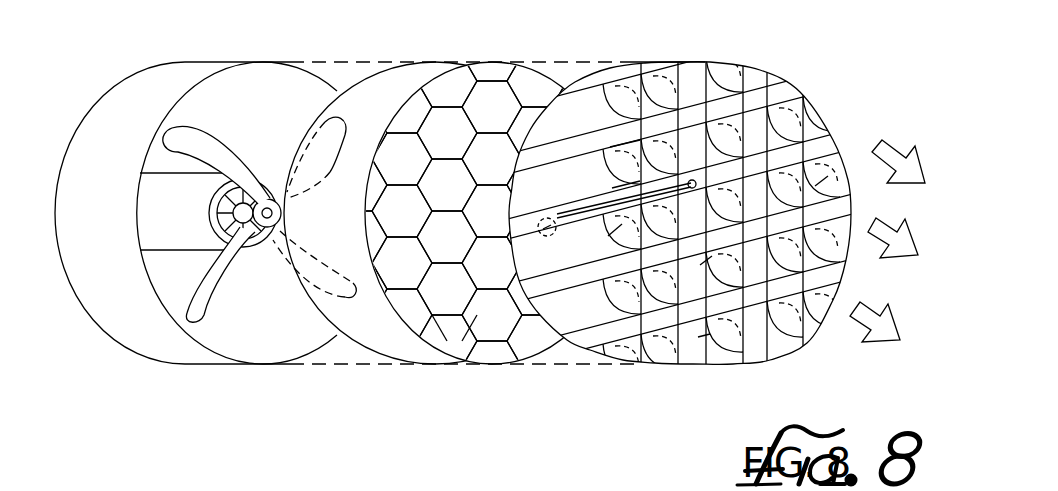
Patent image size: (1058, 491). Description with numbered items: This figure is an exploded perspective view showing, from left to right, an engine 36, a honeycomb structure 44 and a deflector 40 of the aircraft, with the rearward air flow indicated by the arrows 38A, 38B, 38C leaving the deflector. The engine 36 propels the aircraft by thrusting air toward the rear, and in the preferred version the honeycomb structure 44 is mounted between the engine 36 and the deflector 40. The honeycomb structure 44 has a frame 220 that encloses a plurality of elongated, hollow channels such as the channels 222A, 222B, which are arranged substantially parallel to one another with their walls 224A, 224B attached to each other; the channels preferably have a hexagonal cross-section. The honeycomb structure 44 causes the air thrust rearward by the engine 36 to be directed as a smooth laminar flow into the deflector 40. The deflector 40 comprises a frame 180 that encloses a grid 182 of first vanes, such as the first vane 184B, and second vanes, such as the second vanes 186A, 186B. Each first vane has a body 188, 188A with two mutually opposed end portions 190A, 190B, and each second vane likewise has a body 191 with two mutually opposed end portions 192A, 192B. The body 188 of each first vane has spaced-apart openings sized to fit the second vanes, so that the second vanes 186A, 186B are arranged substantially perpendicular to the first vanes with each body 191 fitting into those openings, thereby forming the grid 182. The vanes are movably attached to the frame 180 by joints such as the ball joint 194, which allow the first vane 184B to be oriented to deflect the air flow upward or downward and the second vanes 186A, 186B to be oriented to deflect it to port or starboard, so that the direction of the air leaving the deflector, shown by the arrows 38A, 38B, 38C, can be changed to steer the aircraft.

The engine 36 is at (177, 52).
The honeycomb structure 44 is at (473, 211).
The frame 220 is at (371, 340).
The channel 222A is at (440, 320).
The channel 222B is at (470, 333).
The wall 224A is at (492, 315).
The wall 224B is at (447, 289).
The deflector 40 is at (680, 201).
The frame 180 is at (627, 63).
The grid 182 is at (703, 340).
The second vane 186A is at (650, 105).
The second vane 186B is at (750, 100).
The end portion 192A is at (718, 72).
The end portion 192B is at (740, 360).
The body 188 is at (614, 148).
The body 188A is at (616, 186).
The first vane 184B is at (598, 203).
The ball joint 194 is at (548, 238).
The end portion 190A is at (612, 232).
The end portion 190B is at (822, 182).
The body 191 is at (706, 260).
The arrow 38A is at (901, 150).
The arrow 38B is at (890, 222).
The arrow 38C is at (873, 308).